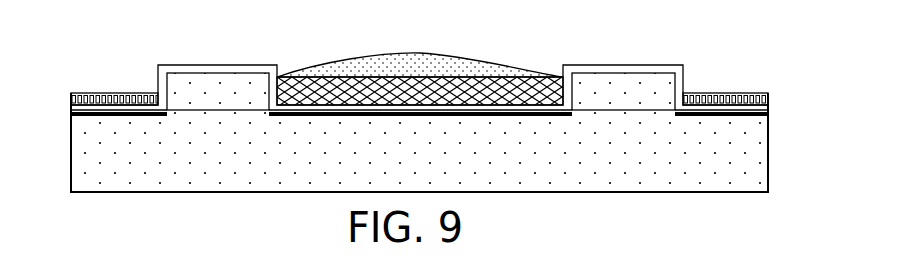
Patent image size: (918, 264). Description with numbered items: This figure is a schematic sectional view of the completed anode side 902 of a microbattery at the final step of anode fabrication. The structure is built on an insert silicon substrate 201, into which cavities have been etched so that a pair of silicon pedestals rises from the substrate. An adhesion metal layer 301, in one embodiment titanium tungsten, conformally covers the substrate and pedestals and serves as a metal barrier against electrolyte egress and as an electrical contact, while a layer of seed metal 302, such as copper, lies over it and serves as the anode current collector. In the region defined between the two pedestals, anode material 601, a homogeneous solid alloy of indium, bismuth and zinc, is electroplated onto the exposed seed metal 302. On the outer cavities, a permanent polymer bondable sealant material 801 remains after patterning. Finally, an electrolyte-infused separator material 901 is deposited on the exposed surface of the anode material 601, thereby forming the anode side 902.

The insert silicon substrate 201 is at (437, 162).
The adhesion metal layer 301 is at (177, 75).
The seed metal 302 is at (235, 70).
The anode material 601 is at (326, 87).
The polymer bondable sealant material 801 is at (768, 100).
The electrolyte-infused separator material 901 is at (465, 65).
The anode side 902 is at (637, 208).